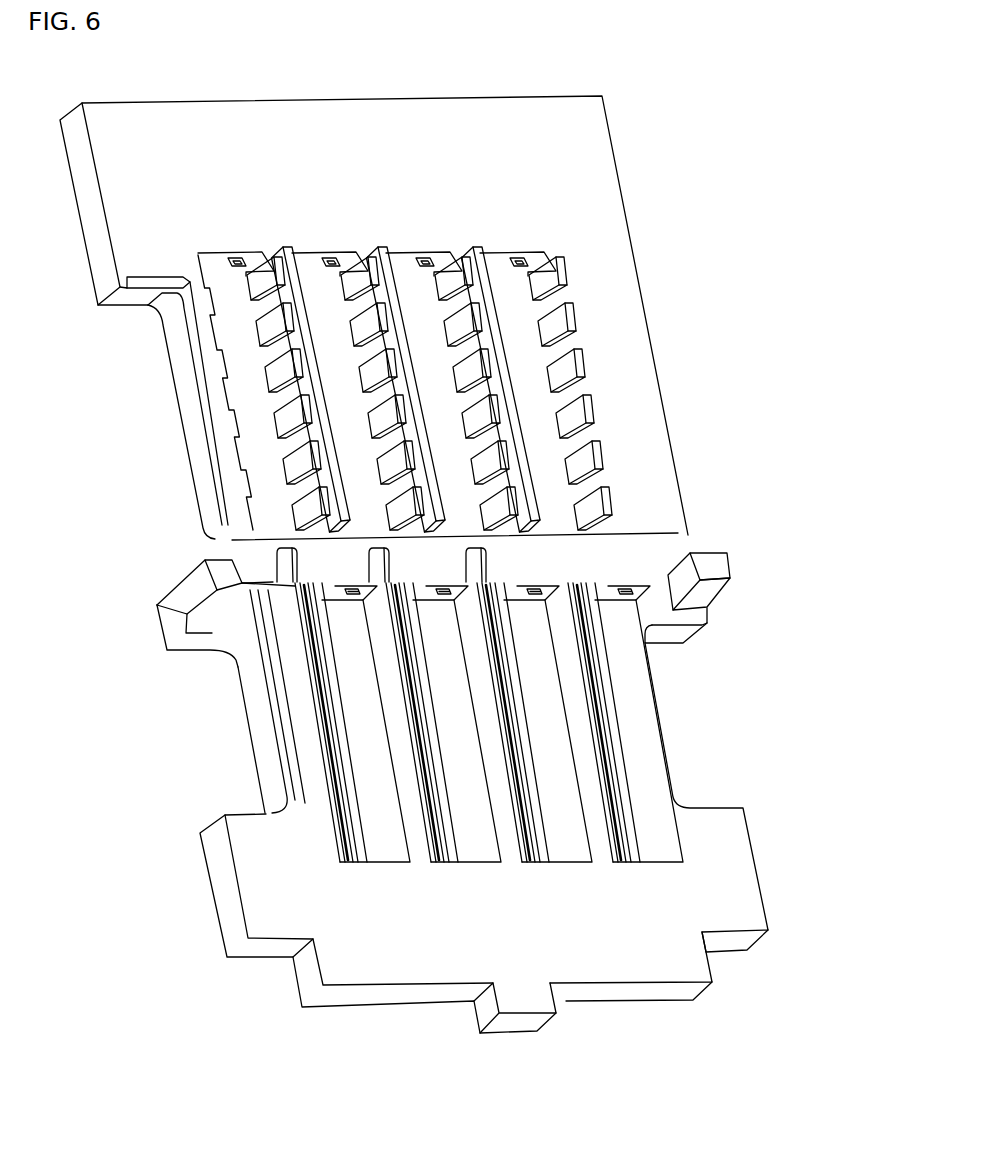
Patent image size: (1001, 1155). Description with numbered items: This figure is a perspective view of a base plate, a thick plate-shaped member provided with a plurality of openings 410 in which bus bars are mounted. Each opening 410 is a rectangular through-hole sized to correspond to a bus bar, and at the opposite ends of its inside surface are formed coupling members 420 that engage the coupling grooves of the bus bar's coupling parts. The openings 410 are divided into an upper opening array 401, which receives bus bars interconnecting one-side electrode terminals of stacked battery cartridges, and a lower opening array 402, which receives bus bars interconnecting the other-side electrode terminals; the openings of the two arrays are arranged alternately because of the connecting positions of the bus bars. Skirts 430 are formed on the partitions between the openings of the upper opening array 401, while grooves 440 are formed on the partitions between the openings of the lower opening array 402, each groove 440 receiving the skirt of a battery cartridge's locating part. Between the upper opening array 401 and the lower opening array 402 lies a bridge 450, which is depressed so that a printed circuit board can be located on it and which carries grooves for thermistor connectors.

The upper opening array 401 is at (648, 235).
The lower opening array 402 is at (733, 588).
The opening 410 is at (245, 422).
The coupling member 420 is at (232, 267).
The skirt 430 is at (398, 322).
The groove 440 is at (330, 757).
The bridge 450 is at (652, 562).